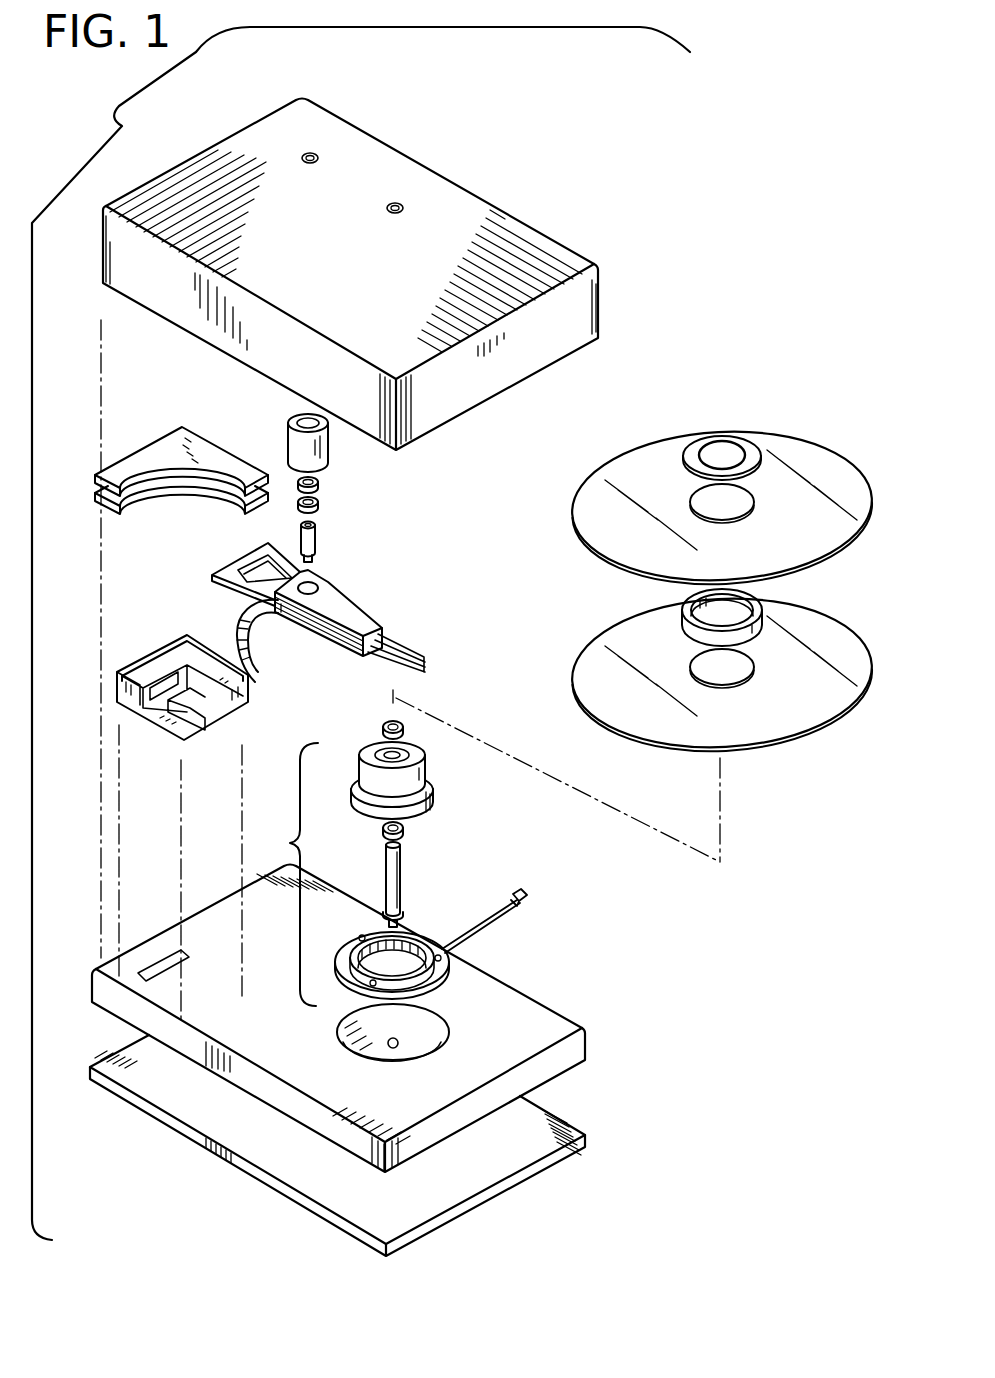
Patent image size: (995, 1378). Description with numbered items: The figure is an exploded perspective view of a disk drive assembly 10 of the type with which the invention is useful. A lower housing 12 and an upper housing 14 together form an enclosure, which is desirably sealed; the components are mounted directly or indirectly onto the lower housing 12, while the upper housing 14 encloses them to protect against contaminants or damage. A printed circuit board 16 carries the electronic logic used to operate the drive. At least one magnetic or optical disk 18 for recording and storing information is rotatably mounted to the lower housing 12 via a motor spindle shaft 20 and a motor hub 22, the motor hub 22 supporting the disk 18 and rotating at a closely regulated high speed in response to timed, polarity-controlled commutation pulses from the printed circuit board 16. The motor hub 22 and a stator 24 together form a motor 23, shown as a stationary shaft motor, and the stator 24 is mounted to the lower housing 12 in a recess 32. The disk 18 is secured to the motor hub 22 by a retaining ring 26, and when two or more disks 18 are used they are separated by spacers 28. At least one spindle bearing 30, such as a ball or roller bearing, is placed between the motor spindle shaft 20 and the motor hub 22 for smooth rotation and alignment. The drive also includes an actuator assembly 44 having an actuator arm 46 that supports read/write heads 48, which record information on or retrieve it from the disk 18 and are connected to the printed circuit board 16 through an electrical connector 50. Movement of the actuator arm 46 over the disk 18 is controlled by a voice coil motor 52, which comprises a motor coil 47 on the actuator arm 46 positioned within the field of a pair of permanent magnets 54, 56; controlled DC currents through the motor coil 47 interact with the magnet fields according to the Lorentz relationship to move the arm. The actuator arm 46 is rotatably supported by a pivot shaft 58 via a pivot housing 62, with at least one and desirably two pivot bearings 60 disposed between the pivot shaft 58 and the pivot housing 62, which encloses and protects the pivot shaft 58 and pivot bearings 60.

The disk drive assembly 10 is at (700, 283).
The lower housing 12 is at (92, 993).
The upper housing 14 is at (480, 198).
The printed circuit board 16 is at (210, 1152).
The disk 18 is at (807, 467).
The motor spindle shaft 20 is at (385, 873).
The motor hub 22 is at (433, 787).
The motor 23 is at (378, 874).
The stator 24 is at (350, 988).
The retaining ring 26 is at (748, 448).
The spacer 28 is at (742, 633).
The spindle bearing 30 is at (385, 725).
The recess 32 is at (428, 1039).
The actuator assembly 44 is at (388, 571).
The actuator arm 46 is at (330, 640).
The motor coil 47 is at (237, 558).
The read/write heads 48 is at (422, 653).
The electrical connector 50 is at (157, 643).
The voice coil motor 52 is at (185, 415).
The permanent magnet 54 is at (148, 455).
The permanent magnet 56 is at (100, 492).
The pivot shaft 58 is at (318, 538).
The pivot bearing 60 is at (320, 500).
The pivot housing 62 is at (290, 438).